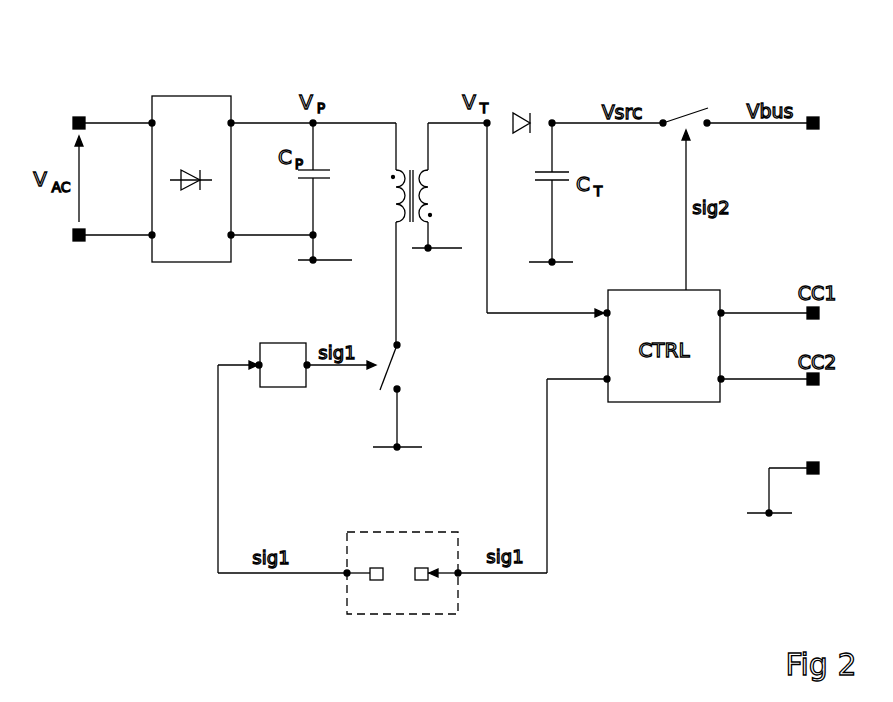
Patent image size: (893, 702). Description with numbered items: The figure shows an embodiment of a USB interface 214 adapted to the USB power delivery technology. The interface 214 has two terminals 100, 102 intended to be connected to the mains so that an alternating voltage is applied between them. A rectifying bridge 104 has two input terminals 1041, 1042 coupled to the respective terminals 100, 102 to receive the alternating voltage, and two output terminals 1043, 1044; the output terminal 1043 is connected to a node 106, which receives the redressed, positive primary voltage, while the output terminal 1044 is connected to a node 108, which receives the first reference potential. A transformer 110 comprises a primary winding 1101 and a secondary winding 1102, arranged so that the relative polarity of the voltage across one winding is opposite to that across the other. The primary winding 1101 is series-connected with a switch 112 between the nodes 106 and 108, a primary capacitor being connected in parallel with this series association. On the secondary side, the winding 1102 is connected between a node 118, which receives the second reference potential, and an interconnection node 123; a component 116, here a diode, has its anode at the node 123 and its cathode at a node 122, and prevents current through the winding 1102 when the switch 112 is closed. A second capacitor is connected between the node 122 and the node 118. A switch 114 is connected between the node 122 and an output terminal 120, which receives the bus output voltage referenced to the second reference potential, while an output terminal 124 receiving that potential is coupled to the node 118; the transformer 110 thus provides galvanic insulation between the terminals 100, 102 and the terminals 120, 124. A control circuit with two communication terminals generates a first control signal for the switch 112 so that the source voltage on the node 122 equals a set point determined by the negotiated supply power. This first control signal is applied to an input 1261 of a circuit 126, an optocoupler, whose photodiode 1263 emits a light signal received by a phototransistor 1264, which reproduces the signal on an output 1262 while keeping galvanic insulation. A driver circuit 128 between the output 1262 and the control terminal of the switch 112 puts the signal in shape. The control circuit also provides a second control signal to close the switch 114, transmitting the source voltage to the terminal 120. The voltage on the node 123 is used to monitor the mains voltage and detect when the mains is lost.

The terminal 100 is at (79, 116).
The terminal 102 is at (79, 242).
The rectifying bridge 104 is at (197, 96).
The input terminal 1041 is at (152, 120).
The input terminal 1042 is at (150, 239).
The output terminal 1043 is at (233, 121).
The output terminal 1044 is at (232, 239).
The node 106 is at (320, 121).
The node 108 is at (310, 233).
The transformer 110 is at (402, 202).
The primary winding 1101 is at (396, 196).
The secondary winding 1102 is at (430, 198).
The switch 112 is at (398, 372).
The switch 114 is at (695, 108).
The component 116 is at (520, 112).
The node 118 is at (412, 255).
The output terminal 120 is at (815, 116).
The node 122 is at (553, 120).
The interconnection node 123 is at (487, 120).
The output terminal 124 is at (815, 462).
The circuit 126 is at (400, 588).
The input 1261 is at (459, 577).
The output 1262 is at (347, 577).
The photodiode 1263 is at (422, 567).
The phototransistor 1264 is at (377, 567).
The driver circuit 128 is at (281, 388).
The USB interface 214 is at (672, 77).